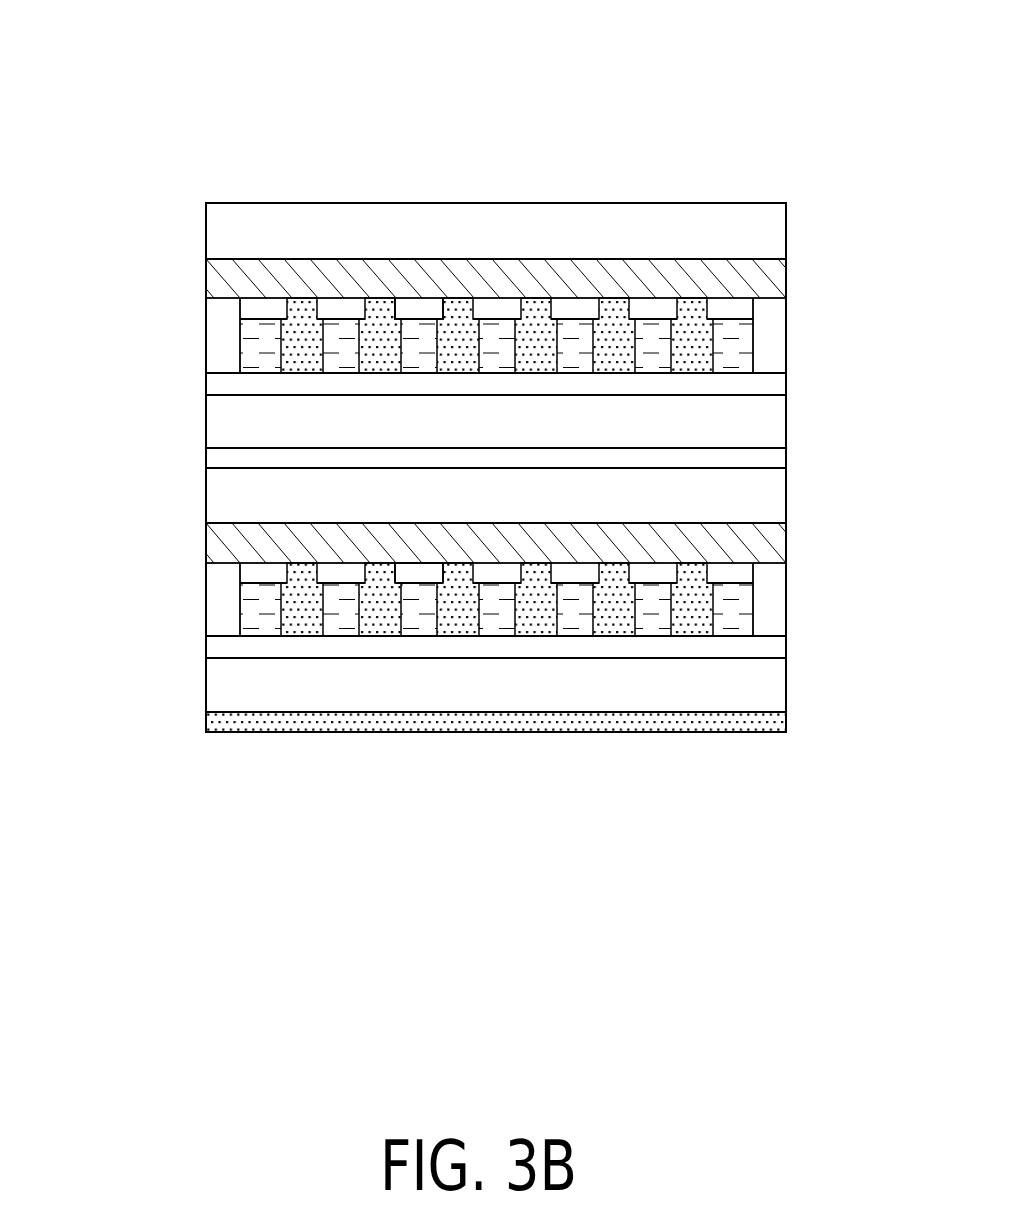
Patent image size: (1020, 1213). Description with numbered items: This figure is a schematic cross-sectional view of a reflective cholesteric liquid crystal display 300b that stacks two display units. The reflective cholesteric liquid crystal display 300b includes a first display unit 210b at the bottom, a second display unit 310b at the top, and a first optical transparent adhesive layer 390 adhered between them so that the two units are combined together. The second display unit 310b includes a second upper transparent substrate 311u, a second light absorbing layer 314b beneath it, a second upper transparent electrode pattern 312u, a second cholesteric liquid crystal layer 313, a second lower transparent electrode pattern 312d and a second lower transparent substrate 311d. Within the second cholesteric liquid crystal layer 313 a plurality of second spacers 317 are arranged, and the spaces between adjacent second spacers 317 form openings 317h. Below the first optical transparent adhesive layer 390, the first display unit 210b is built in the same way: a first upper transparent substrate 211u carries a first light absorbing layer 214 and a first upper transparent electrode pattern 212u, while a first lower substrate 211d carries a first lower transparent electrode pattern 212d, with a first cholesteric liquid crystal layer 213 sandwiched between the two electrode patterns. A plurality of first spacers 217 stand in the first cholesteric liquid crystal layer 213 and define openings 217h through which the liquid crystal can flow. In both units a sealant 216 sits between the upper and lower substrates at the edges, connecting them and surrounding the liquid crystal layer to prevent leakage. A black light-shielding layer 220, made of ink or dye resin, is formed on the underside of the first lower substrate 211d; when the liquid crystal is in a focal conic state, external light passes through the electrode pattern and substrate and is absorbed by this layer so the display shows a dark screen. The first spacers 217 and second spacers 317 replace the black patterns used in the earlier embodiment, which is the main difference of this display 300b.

The reflective cholesteric liquid crystal display 300b is at (175, 89).
The second display unit 310b is at (143, 317).
The first display unit 210b is at (143, 580).
The second upper transparent substrate 311u is at (777, 227).
The second lower transparent substrate 311d is at (770, 423).
The second light absorbing layer 314b is at (773, 292).
The second upper transparent electrode pattern 312u is at (745, 307).
The second lower transparent electrode pattern 312d is at (770, 383).
The second cholesteric liquid crystal layer 313 is at (727, 353).
The second spacers 317 is at (375, 330).
The opening 317h is at (427, 308).
The first optical transparent adhesive layer 390 is at (217, 460).
The first upper transparent substrate 211u is at (777, 490).
The first lower substrate 211d is at (770, 686).
The first light absorbing layer 214 is at (777, 552).
The first upper transparent electrode pattern 212u is at (745, 572).
The first lower transparent electrode pattern 212d is at (770, 646).
The first cholesteric liquid crystal layer 213 is at (727, 617).
The first spacers 217 is at (307, 618).
The opening 217h is at (417, 628).
The sealant 216 is at (217, 598).
The black light-shielding layer 220 is at (210, 724).